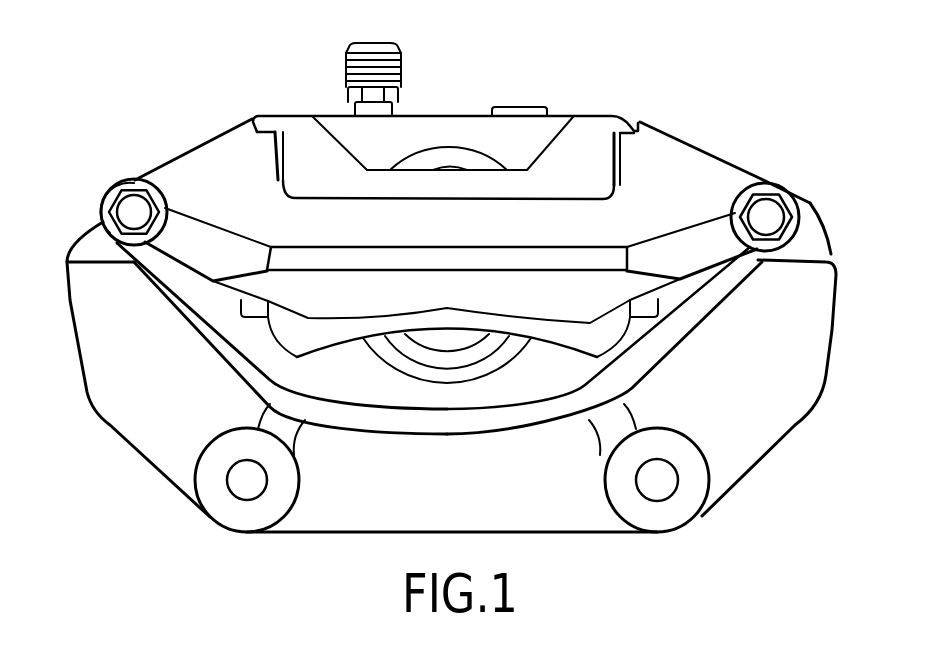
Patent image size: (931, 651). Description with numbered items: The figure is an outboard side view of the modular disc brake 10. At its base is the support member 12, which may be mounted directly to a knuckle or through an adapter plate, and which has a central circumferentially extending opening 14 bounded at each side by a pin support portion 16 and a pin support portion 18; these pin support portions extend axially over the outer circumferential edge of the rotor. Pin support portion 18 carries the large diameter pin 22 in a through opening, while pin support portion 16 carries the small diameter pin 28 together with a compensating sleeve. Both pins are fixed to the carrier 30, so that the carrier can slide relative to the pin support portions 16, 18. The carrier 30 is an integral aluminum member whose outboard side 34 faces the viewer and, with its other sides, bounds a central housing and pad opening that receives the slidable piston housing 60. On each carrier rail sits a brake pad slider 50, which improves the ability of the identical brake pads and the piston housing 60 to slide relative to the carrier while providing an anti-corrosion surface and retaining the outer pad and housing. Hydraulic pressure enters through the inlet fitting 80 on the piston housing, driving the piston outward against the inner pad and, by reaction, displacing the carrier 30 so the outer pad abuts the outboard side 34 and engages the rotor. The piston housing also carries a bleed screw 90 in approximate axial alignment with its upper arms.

The modular disc brake 10 is at (440, 275).
The support member 12 is at (751, 436).
The central circumferentially extending opening 14 is at (354, 381).
The pin support portion 16 is at (101, 203).
The pin support portion 18 is at (799, 220).
The large diameter pin 22 is at (767, 204).
The small diameter pin 28 is at (128, 208).
The carrier 30 is at (697, 137).
The outboard side 34 is at (411, 234).
The brake pad slider 50 is at (274, 151).
The piston housing 60 is at (290, 123).
The inlet fitting 80 is at (517, 107).
The bleed screw 90 is at (398, 62).